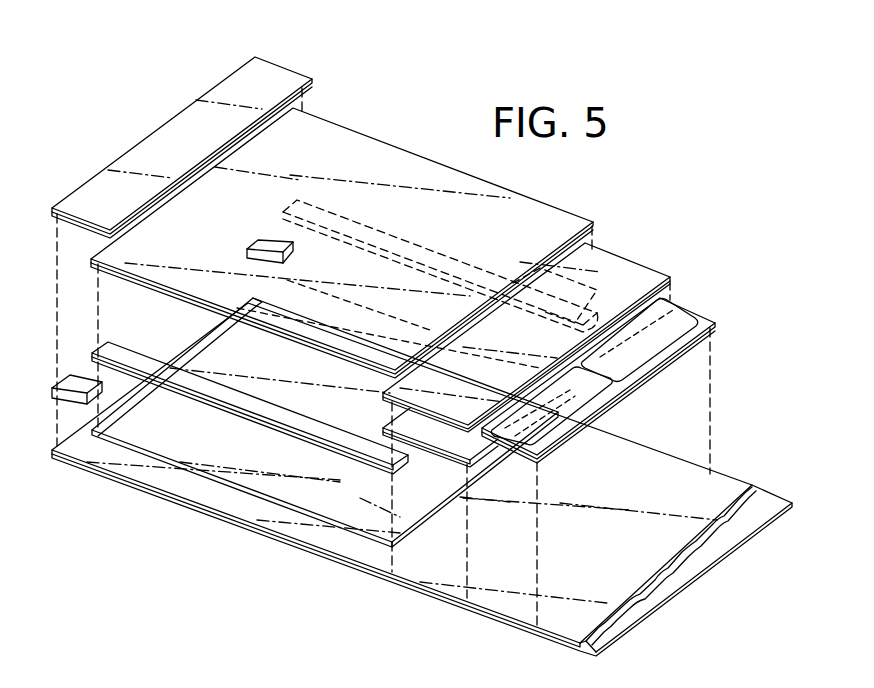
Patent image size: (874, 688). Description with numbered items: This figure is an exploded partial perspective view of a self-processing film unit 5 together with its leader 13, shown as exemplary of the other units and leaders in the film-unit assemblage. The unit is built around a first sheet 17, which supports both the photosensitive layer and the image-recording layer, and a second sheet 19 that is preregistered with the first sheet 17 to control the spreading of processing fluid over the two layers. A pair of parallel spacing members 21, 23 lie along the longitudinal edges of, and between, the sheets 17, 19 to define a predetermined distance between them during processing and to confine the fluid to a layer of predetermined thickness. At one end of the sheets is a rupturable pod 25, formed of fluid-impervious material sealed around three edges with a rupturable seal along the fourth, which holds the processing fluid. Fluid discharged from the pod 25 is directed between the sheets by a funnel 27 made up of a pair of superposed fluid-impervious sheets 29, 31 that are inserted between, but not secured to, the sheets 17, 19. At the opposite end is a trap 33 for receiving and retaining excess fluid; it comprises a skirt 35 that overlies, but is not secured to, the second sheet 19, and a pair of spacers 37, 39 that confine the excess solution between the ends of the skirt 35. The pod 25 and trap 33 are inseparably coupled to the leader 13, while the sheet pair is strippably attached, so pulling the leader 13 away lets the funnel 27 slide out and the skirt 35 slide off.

The self-processing film unit 5 is at (421, 152).
The leader 13 is at (157, 492).
The first sheet 17 is at (337, 560).
The second sheet 19 is at (547, 208).
The spacing member 21 is at (141, 357).
The spacing member 23 is at (323, 212).
The rupturable pod 25 is at (690, 308).
The funnel 27 is at (647, 262).
The fluid-impervious sheet 29 is at (608, 253).
The fluid-impervious sheet 31 is at (450, 453).
The trap 33 is at (162, 122).
The skirt 35 is at (267, 68).
The spacer 37 is at (64, 378).
The spacer 39 is at (260, 240).